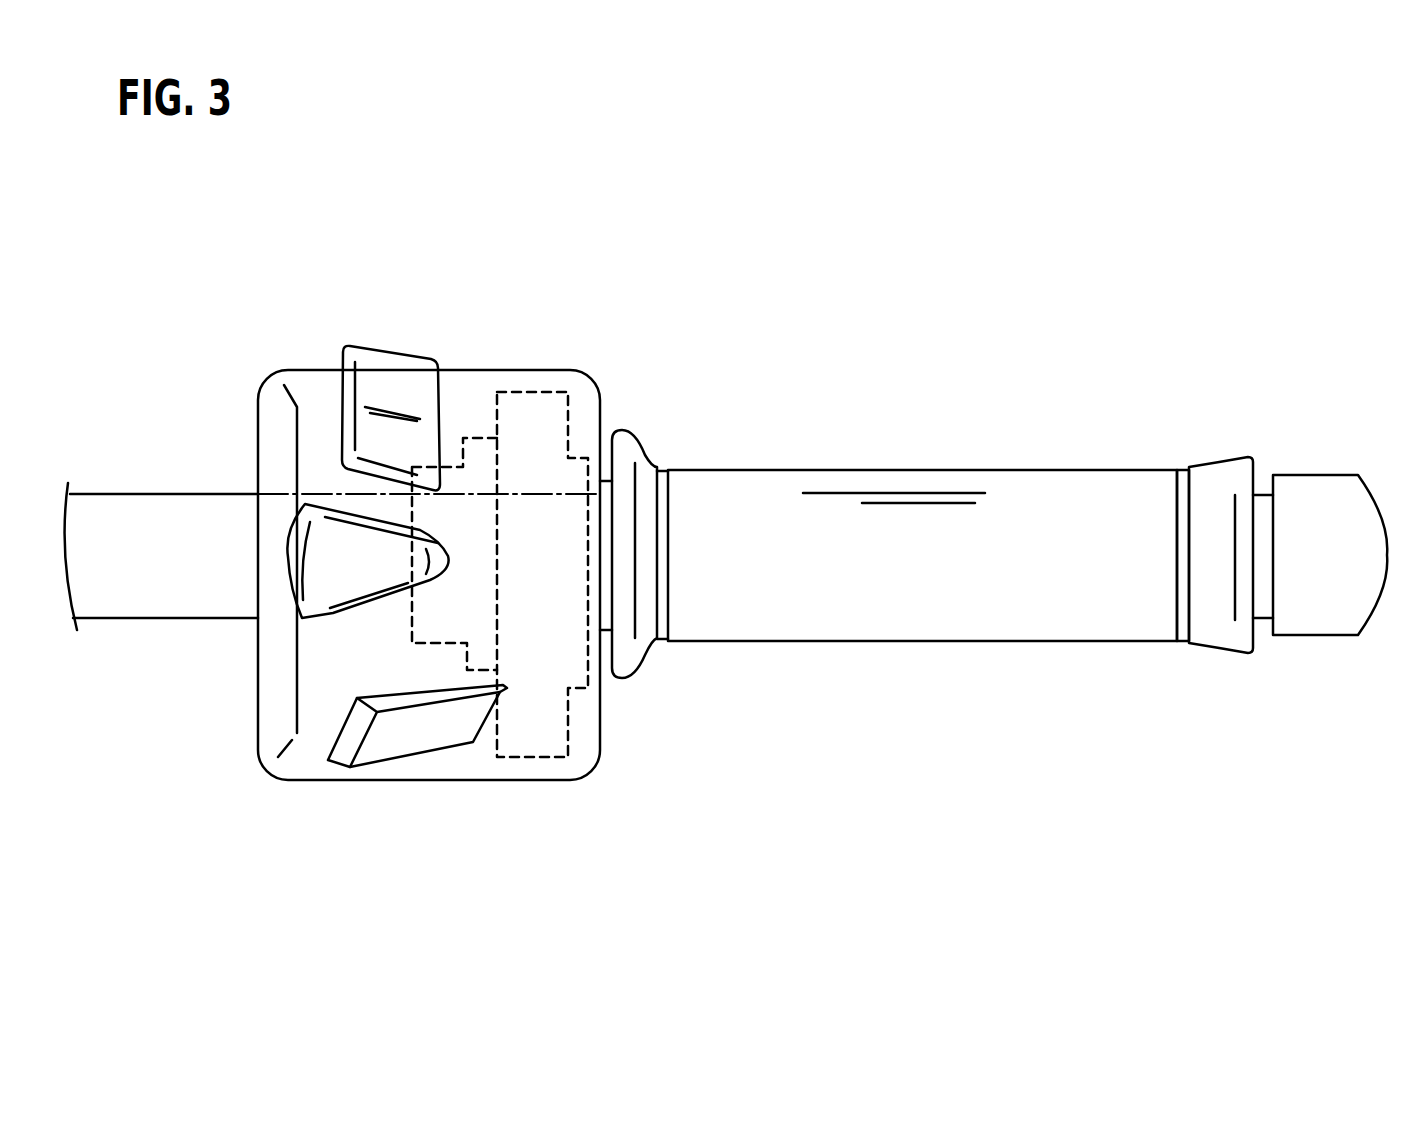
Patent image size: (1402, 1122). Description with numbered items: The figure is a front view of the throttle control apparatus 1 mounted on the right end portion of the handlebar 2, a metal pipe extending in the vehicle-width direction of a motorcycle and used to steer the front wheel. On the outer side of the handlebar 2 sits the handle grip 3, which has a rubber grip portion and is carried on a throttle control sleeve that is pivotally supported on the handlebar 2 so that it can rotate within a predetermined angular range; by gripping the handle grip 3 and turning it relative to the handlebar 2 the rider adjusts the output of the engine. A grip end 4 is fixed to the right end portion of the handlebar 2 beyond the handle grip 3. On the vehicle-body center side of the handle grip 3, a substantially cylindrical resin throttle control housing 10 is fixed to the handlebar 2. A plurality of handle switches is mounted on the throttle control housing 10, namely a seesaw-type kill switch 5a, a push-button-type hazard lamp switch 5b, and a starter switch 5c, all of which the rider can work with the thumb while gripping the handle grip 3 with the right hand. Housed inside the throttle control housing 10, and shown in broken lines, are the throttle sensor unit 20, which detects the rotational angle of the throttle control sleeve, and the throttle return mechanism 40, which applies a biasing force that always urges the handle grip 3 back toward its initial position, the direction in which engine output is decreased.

The throttle control apparatus 1 is at (850, 272).
The handlebar 2 is at (193, 512).
The handle grip 3 is at (1034, 490).
The grip end 4 is at (1323, 493).
The kill switch 5a is at (372, 360).
The hazard lamp switch 5b is at (318, 592).
The starter switch 5c is at (420, 735).
The throttle control housing 10 is at (503, 784).
The throttle sensor unit 20 is at (531, 386).
The throttle return mechanism 40 is at (478, 434).